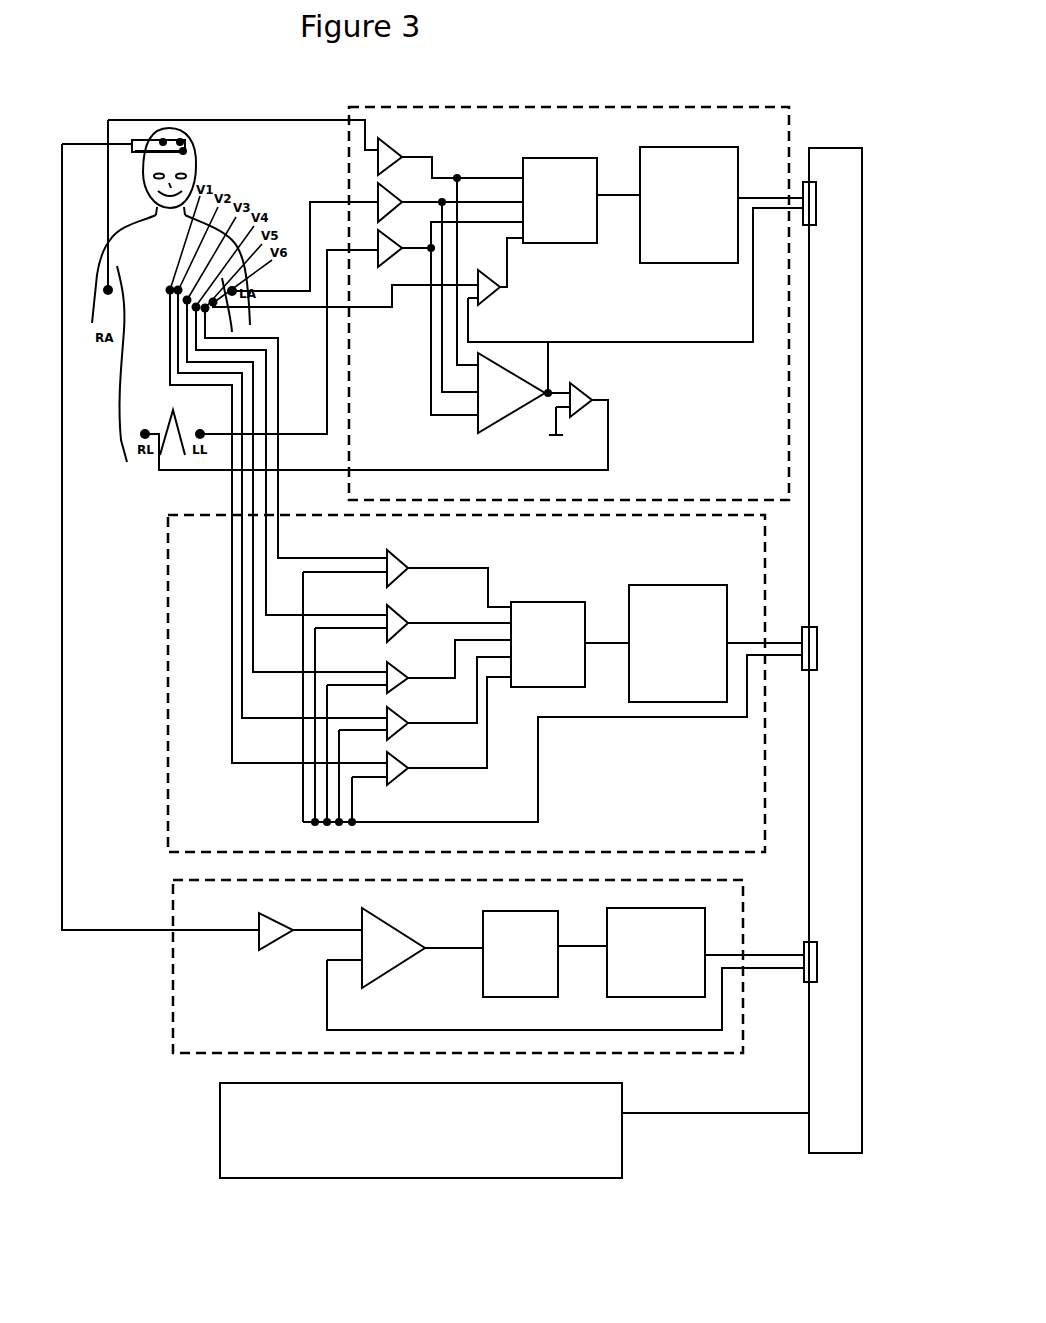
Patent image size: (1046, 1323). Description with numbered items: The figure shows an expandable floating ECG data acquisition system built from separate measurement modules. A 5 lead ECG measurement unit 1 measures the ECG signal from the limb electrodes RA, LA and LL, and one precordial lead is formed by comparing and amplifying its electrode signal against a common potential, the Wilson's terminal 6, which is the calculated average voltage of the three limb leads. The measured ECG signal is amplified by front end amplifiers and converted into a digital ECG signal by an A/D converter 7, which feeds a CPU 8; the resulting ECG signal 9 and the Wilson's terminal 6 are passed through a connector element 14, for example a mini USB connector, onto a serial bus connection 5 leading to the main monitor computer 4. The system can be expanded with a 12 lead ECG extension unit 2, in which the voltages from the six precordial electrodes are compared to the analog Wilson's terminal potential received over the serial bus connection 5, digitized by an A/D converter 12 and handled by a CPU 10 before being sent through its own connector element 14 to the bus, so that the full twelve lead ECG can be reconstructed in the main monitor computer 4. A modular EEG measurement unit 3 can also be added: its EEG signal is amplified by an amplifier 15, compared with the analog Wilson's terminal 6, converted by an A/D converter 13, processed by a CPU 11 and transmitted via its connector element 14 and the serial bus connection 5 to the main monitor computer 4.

The 5 lead ECG measurement unit 1 is at (793, 127).
The 12 lead ECG extension unit 2 is at (767, 563).
The EEG measurement unit 3 is at (746, 930).
The main monitor computer 4 is at (622, 1178).
The serial bus connection 5 is at (860, 148).
The Wilson's terminal 6 is at (550, 391).
The A/D converter 7 is at (540, 158).
The CPU 8 is at (670, 147).
The ECG signal 9 is at (746, 201).
The CPU 10 is at (667, 585).
The CPU 11 is at (646, 912).
The A/D converter 12 is at (525, 602).
The A/D converter 13 is at (503, 916).
The connector element 14 is at (818, 214).
The amplifier 15 is at (282, 928).